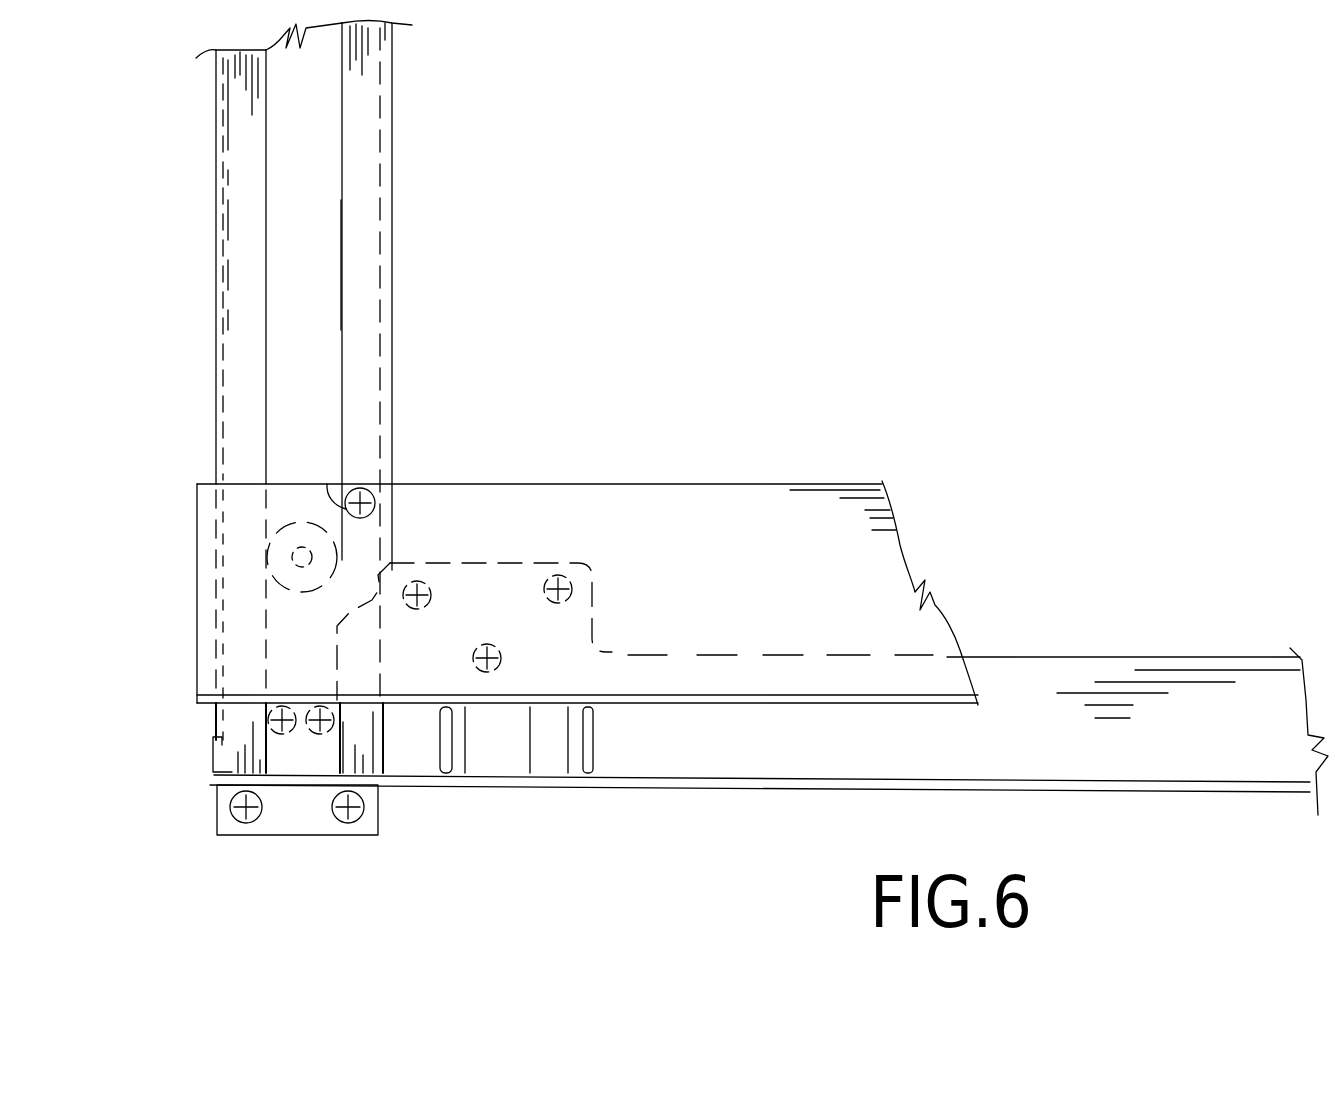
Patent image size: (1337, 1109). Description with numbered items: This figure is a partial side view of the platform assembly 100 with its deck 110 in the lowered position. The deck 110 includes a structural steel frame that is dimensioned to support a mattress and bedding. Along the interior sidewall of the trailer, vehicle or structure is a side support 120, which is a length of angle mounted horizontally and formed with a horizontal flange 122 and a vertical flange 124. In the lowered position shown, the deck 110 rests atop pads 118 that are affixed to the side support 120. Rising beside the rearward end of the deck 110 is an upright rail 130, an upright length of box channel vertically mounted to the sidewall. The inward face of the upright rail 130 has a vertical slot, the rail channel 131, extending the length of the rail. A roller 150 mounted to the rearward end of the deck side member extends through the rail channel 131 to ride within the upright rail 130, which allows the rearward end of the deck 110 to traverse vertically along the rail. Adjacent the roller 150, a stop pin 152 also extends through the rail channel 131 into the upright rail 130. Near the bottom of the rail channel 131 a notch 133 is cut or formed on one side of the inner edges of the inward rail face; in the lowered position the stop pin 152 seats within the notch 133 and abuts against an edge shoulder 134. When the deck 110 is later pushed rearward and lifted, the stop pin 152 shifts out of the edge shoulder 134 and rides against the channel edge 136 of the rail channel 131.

The platform assembly 100 is at (775, 180).
The deck 110 is at (772, 480).
The pads 118 is at (577, 743).
The side support 120 is at (1205, 657).
The horizontal flange 122 is at (955, 782).
The vertical flange 124 is at (1050, 665).
The upright rail 130 is at (392, 140).
The rail channel 131 is at (330, 130).
The notch 133 is at (373, 547).
The edge shoulder 134 is at (327, 484).
The channel edge 136 is at (342, 292).
The roller 150 is at (282, 527).
The stop pin 152 is at (358, 486).